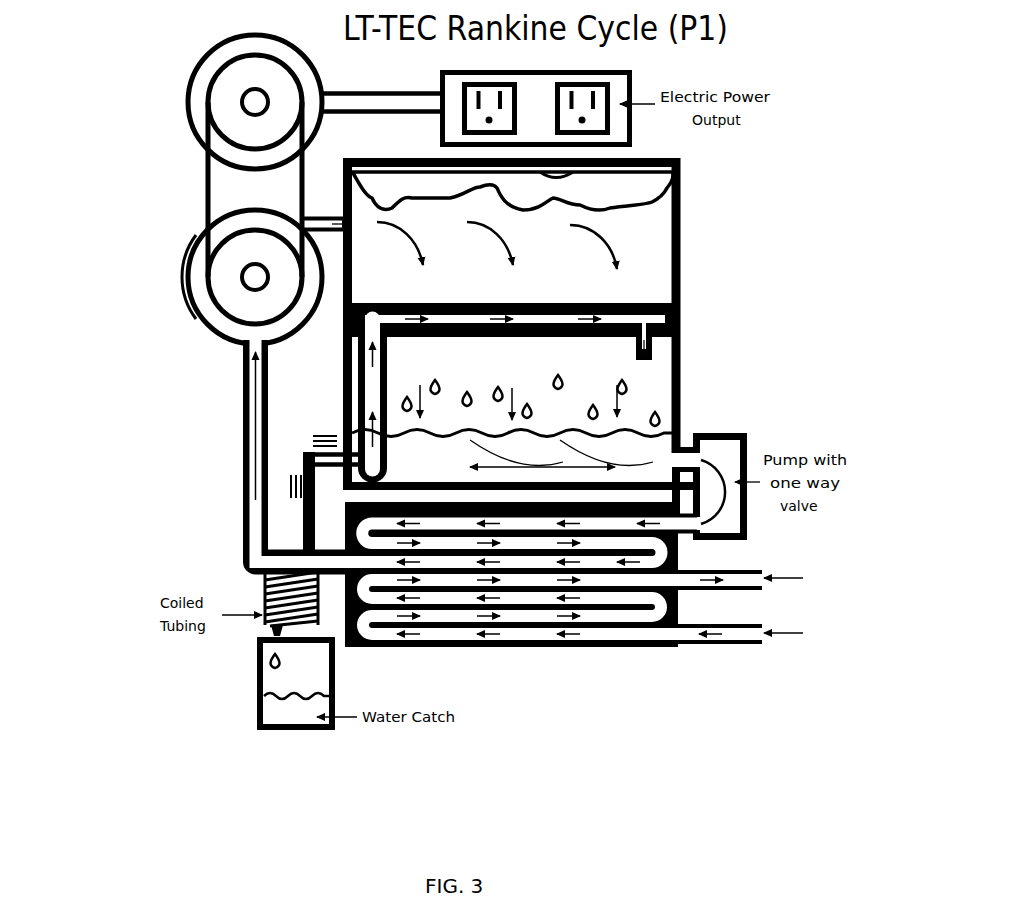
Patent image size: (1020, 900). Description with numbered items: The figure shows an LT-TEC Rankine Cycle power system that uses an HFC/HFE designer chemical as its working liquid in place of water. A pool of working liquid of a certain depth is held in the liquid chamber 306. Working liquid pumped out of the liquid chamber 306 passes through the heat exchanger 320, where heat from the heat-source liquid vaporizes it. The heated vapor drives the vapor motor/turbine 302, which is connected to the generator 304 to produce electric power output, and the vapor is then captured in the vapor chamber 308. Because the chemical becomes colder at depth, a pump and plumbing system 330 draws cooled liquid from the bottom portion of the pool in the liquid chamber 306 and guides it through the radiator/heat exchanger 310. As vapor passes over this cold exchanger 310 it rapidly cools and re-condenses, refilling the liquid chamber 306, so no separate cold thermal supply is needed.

The vapor motor/turbine 302 is at (189, 275).
The generator 304 is at (189, 103).
The working liquid chamber 306 is at (652, 397).
The vapor chamber 308 is at (638, 233).
The radiator/heat exchanger 310 is at (680, 322).
The heat exchanger 320 is at (566, 530).
The pump and plumbing system 330 is at (357, 388).